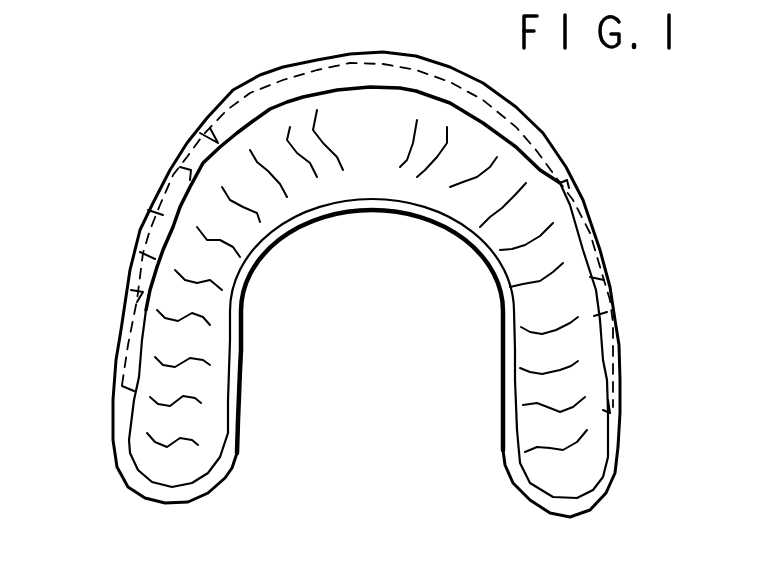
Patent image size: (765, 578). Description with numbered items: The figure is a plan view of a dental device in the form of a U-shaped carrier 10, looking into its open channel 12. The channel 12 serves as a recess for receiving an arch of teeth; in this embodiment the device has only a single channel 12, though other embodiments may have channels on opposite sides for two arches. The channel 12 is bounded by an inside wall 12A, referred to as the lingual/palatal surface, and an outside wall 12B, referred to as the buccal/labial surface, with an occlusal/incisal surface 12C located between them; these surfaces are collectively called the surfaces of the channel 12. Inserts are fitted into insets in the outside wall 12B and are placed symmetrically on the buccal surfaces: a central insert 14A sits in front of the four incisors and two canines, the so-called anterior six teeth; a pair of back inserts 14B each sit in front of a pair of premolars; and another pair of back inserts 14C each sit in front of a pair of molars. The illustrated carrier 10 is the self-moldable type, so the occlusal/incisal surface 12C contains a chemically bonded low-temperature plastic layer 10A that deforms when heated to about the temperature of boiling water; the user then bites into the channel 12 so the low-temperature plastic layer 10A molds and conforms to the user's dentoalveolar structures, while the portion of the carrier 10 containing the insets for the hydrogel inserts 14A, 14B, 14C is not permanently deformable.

The U-shaped carrier 10 is at (398, 284).
The low-temperature plastic layer 10A is at (369, 156).
The channel 12 is at (368, 322).
The inside wall 12A is at (496, 382).
The outside wall 12B is at (236, 363).
The occlusal/incisal surface 12C is at (367, 194).
The central insert 14A is at (367, 209).
The back inserts 14B is at (395, 207).
The back inserts 14C is at (378, 358).